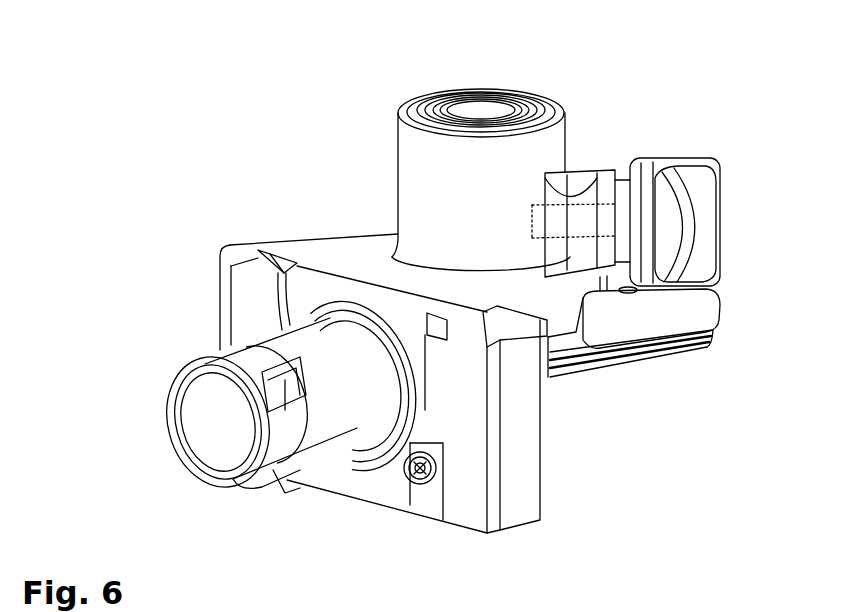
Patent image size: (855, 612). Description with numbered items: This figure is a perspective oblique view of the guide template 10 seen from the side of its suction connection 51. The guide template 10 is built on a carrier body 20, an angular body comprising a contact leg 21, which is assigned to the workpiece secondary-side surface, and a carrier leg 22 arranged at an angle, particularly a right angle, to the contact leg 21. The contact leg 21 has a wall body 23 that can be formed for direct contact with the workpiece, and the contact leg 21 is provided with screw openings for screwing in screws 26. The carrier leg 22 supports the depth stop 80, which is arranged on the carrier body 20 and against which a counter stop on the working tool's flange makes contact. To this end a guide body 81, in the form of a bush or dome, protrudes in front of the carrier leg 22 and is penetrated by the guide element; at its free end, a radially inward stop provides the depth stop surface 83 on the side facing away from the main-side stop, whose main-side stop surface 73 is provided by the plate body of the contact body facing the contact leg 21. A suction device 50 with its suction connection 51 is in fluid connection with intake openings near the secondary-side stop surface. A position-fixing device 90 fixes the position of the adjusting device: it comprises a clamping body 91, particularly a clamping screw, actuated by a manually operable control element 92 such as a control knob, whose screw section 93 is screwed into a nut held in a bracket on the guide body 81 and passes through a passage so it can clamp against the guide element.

The guide template 10 is at (147, 147).
The carrier body 20 is at (527, 528).
The contact leg 21 is at (222, 297).
The carrier leg 22 is at (338, 255).
The wall body 23 is at (480, 528).
The screws 26 is at (413, 492).
The suction device 50 is at (173, 395).
The suction connection 51 is at (282, 470).
The main-side stop surface 73 is at (696, 358).
The depth stop 80 is at (552, 91).
The guide body 81 is at (410, 107).
The depth stop surface 83 is at (457, 103).
The position-fixing device 90 is at (703, 152).
The clamping body 91 is at (618, 205).
The control element 92 is at (715, 245).
The screw section 93 is at (532, 222).